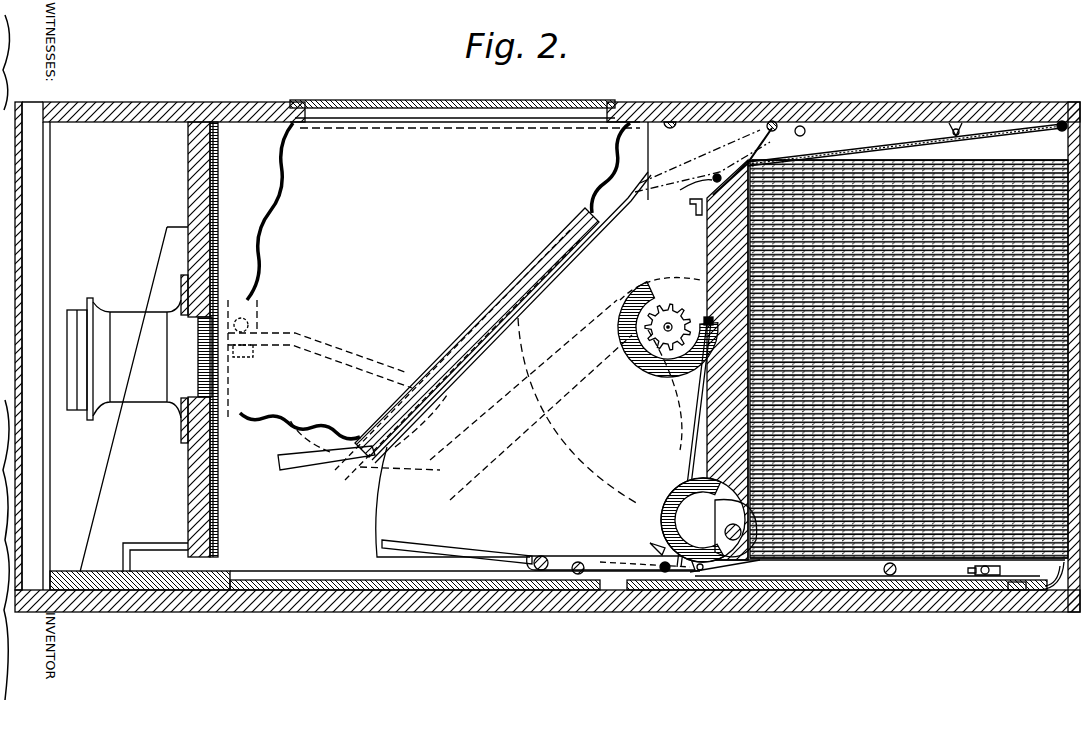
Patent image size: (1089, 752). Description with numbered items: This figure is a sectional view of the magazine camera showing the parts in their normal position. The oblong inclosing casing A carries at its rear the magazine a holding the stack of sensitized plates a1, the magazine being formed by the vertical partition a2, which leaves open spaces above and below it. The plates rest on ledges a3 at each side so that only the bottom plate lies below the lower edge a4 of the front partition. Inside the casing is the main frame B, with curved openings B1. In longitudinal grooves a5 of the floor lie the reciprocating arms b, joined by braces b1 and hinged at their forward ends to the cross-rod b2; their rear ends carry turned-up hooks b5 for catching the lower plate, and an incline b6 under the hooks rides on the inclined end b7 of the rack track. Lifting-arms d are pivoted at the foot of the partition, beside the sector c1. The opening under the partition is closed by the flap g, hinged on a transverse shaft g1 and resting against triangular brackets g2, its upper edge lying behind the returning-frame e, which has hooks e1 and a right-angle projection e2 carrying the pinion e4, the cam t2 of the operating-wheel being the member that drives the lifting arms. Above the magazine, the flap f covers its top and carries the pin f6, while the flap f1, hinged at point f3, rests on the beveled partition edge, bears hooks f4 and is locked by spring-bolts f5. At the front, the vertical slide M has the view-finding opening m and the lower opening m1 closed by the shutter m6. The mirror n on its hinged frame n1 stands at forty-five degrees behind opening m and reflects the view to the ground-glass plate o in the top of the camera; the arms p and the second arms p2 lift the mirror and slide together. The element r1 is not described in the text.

The inclosing casing A is at (775, 102).
The ground-glass plate o is at (393, 100).
The magazine a is at (988, 150).
The sensitized plates a1 is at (882, 152).
The vertical partition a2 is at (705, 262).
The ledges a3 is at (862, 562).
The lower edge of front partition a4 is at (728, 584).
The longitudinal grooves a5 is at (400, 578).
The casing bottom r1 is at (618, 600).
The vertical slide M is at (188, 438).
The opening m is at (210, 377).
The lower opening m1 is at (188, 510).
The shutter m6 is at (214, 512).
The arms p is at (335, 452).
The second arm p2 is at (360, 350).
The mirror n is at (505, 318).
The hinged frame n1 is at (615, 205).
The main frame B is at (453, 502).
The curved openings B1 is at (618, 316).
The lifting-arms d is at (490, 545).
The reciprocating arms b is at (835, 578).
The braces b1 is at (580, 562).
The cross-rod b2 is at (543, 556).
The hooks b5 is at (1008, 578).
The incline b6 is at (1056, 592).
The inclined end b7 is at (1020, 592).
The sector c1 is at (745, 572).
The flap g is at (648, 535).
The transverse shaft g1 is at (660, 560).
The triangular brackets g2 is at (688, 572).
The returning-frame e is at (700, 478).
The hooks e1 is at (702, 522).
The right-angle projection e2 is at (673, 390).
The pinion e4 is at (640, 358).
The cam t2 is at (579, 411).
The flap f is at (865, 158).
The flap f1 is at (740, 160).
The hinge point f3 is at (1058, 120).
The hooks f4 is at (690, 210).
The spring-bolts f5 is at (695, 185).
The pin f6 is at (953, 122).